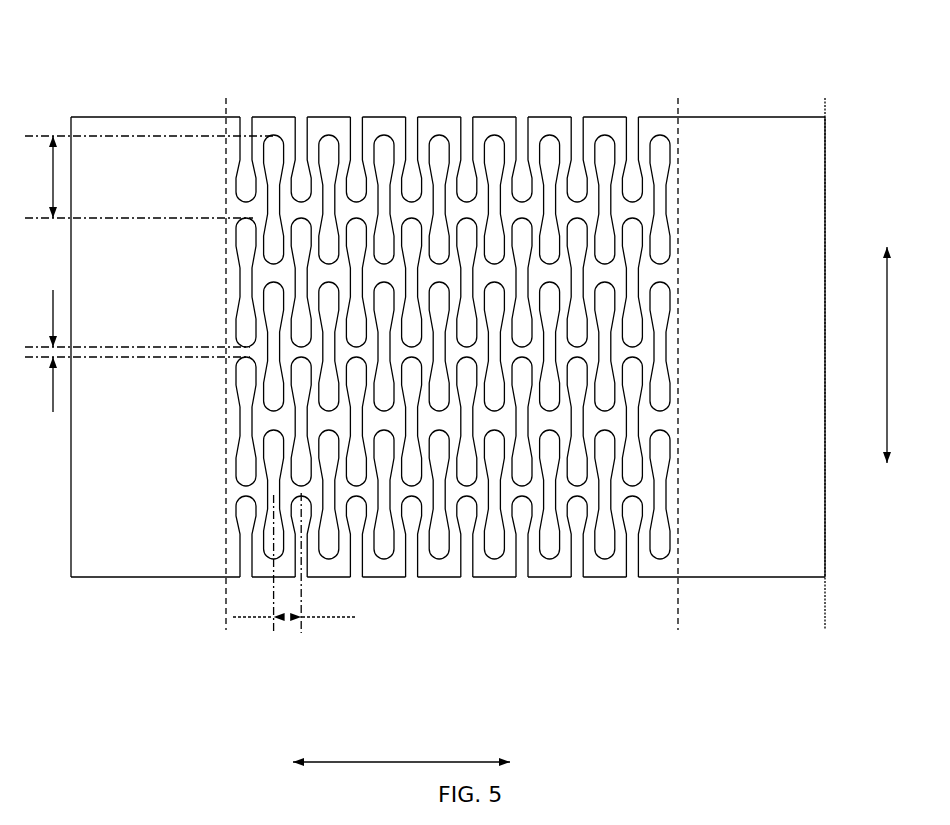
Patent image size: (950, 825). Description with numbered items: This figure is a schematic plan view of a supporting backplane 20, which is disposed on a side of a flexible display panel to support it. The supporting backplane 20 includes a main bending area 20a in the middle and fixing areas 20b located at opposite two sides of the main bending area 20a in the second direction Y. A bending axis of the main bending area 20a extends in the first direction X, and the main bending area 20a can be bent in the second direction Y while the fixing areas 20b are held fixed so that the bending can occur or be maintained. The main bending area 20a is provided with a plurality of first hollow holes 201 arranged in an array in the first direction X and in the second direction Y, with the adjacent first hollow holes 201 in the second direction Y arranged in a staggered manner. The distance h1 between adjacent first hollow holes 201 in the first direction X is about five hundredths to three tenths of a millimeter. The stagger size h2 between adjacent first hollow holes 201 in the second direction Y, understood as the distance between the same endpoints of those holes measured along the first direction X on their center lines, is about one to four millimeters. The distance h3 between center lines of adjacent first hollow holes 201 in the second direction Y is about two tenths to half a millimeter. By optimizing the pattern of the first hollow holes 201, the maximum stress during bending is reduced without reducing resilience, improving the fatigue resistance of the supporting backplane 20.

The supporting backplane 20 is at (150, 47).
The first hollow hole 201 is at (383, 150).
The main bending area 20a is at (488, 600).
The fixing area 20b is at (108, 596).
The distance between adjacent first hollow holes in the first direction h1 is at (135, 351).
The stagger size h2 is at (143, 177).
The distance between center lines of adjacent first hollow holes h3 is at (294, 563).
The first direction X is at (902, 355).
The second direction Y is at (401, 748).